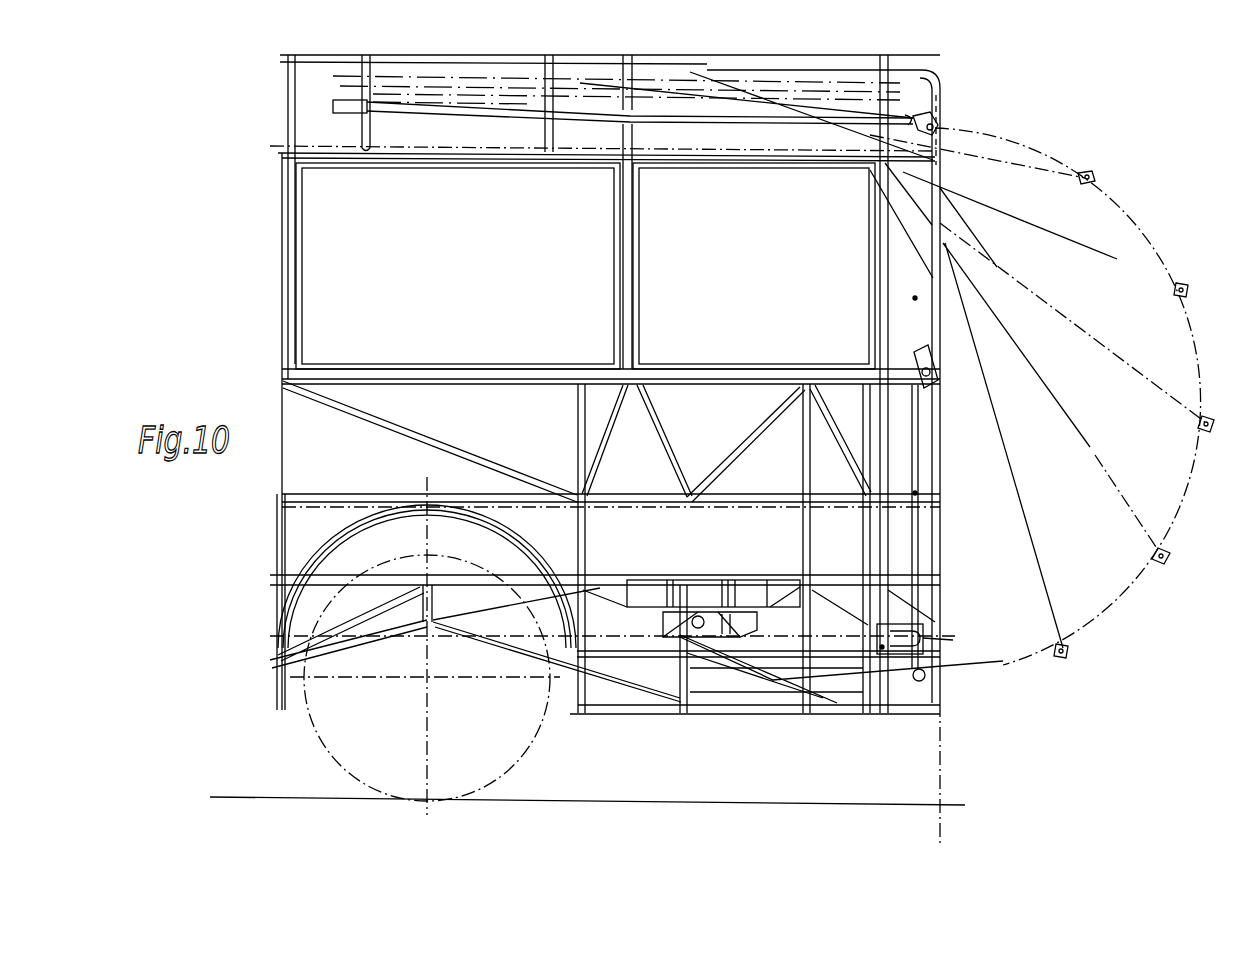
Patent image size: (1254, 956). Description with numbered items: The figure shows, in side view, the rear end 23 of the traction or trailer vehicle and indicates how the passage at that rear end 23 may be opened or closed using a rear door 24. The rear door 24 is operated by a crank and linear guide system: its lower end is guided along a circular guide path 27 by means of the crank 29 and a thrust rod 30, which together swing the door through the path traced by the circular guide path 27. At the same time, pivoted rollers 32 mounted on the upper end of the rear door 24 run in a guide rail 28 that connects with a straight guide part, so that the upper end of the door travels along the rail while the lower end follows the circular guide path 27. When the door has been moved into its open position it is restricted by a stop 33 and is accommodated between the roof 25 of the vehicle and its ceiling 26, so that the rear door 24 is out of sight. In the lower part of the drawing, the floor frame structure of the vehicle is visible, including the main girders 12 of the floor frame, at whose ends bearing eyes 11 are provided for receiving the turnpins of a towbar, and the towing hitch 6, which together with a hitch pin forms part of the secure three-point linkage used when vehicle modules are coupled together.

The towing hitch 6 is at (870, 713).
The bearing eyes 11 is at (925, 673).
The main girders 12 is at (882, 647).
The rear end 23 is at (915, 298).
The rear door 24 is at (942, 345).
The roof 25 is at (757, 63).
The ceiling 26 is at (578, 152).
The circular guide path 27 is at (1185, 495).
The guide rail 28 is at (500, 117).
The crank 29 is at (940, 370).
The thrust rod 30 is at (915, 493).
The pivoted rollers 32 is at (917, 121).
The stop 33 is at (333, 113).